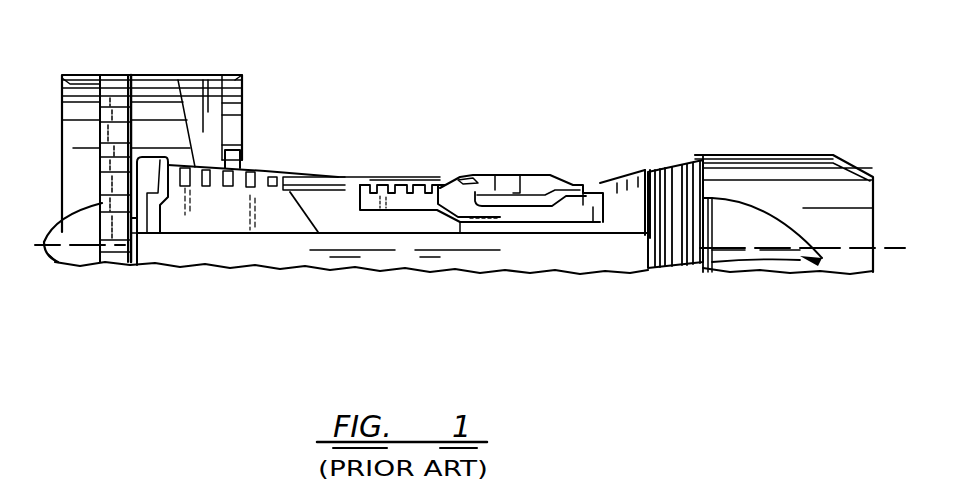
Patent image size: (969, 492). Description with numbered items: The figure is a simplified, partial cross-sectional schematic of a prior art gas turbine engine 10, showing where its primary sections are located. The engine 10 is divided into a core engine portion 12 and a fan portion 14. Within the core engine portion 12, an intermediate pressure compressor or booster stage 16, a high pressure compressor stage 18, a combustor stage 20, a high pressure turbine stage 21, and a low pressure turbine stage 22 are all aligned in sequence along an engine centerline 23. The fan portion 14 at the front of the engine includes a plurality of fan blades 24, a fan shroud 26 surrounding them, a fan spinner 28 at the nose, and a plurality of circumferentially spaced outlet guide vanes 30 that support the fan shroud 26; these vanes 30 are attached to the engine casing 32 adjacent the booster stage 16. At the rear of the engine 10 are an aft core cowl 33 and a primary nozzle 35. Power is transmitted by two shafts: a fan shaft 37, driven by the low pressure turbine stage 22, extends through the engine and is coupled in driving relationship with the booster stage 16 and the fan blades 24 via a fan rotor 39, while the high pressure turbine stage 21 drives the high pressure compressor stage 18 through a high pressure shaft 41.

The gas turbine engine 10 is at (720, 110).
The core engine portion 12 is at (133, 290).
The fan portion 14 is at (235, 65).
The booster stage 16 is at (250, 168).
The high pressure compressor stage 18 is at (381, 184).
The combustor stage 20 is at (508, 174).
The high pressure turbine stage 21 is at (634, 172).
The low pressure turbine stage 22 is at (668, 160).
The engine centerline 23 is at (738, 268).
The fan blades 24 is at (129, 147).
The fan shroud 26 is at (92, 74).
The fan spinner 28 is at (73, 205).
The outlet guide vanes 30 is at (215, 112).
The engine casing 32 is at (236, 78).
The aft core cowl 33 is at (748, 156).
The primary nozzle 35 is at (750, 215).
The fan shaft 37 is at (526, 235).
The fan rotor 39 is at (134, 268).
The high pressure shaft 41 is at (580, 228).